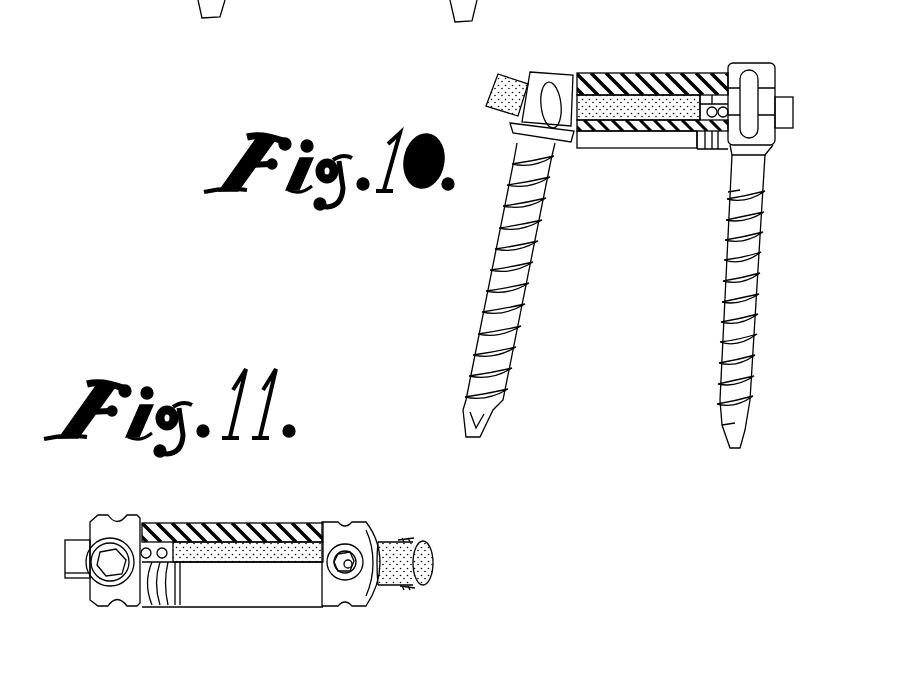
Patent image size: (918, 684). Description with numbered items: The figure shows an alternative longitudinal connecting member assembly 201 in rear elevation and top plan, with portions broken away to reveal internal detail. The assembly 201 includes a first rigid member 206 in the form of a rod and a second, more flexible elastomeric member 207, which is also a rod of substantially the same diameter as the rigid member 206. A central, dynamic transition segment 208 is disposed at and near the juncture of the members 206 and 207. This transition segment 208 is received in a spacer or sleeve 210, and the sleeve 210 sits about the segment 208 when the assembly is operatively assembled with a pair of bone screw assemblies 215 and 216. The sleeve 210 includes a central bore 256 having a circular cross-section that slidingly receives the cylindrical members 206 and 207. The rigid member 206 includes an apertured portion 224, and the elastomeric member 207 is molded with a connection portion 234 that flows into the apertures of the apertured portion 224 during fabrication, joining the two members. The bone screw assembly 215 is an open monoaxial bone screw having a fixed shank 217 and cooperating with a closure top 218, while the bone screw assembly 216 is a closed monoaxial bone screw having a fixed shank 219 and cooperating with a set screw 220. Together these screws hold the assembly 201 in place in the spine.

In FIG. 10, the longitudinal connecting member assembly 201 is at (648, 58).
In FIG. 11, the longitudinal connecting member assembly 201 is at (238, 514).
In FIG. 10, the central bore 256 is at (659, 100).
In FIG. 10, the apertured portion 224 is at (718, 97).
In FIG. 11, the apertured portion 224 is at (158, 592).
In FIG. 10, the first rigid member 206 is at (790, 100).
In FIG. 11, the first rigid member 206 is at (67, 585).
In FIG. 10, the bone screw assembly 216 is at (545, 76).
In FIG. 11, the bone screw assembly 216 is at (381, 587).
In FIG. 10, the second elastomeric member 207 is at (497, 108).
In FIG. 11, the second elastomeric member 207 is at (282, 545).
In FIG. 10, the sleeve 210 is at (594, 140).
In FIG. 11, the sleeve 210 is at (232, 600).
In FIG. 10, the transition segment 208 is at (640, 138).
In FIG. 10, the bone screw assembly 215 is at (765, 138).
In FIG. 11, the bone screw assembly 215 is at (130, 605).
In FIG. 10, the fixed shank 219 is at (495, 238).
In FIG. 11, the fixed shank 219 is at (417, 538).
In FIG. 10, the fixed shank 217 is at (760, 247).
In FIG. 11, the closure top 218 is at (108, 556).
In FIG. 11, the connection portion 234 is at (164, 494).
In FIG. 11, the set screw 220 is at (349, 556).